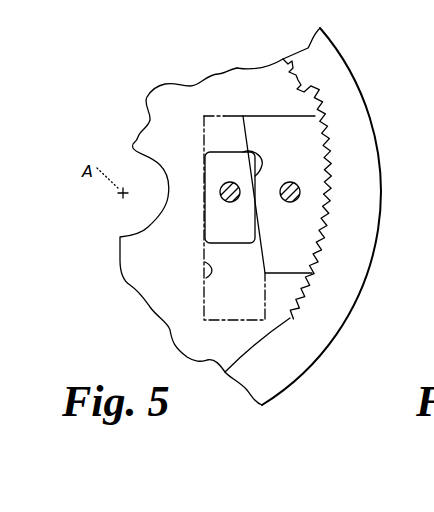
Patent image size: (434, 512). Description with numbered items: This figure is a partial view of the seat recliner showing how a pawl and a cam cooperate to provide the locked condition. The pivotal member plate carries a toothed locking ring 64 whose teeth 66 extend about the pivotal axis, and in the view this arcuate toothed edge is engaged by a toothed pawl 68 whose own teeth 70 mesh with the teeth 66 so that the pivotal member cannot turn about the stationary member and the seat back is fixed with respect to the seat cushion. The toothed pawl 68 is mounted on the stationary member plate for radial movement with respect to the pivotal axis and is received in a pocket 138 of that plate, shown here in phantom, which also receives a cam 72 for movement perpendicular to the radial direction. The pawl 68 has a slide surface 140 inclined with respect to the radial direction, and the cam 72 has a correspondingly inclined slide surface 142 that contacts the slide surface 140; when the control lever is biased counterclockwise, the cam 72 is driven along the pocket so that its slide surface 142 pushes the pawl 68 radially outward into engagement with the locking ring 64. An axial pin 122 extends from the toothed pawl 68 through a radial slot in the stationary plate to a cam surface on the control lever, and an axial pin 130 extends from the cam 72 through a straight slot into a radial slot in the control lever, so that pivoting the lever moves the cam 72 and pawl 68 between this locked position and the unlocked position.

The toothed locking ring 64 is at (273, 77).
The teeth 66 is at (298, 88).
The toothed pawl 68 is at (317, 153).
The teeth 70 is at (331, 210).
The cam 72 is at (213, 220).
The axial pin 122 is at (292, 202).
The axial pin 130 is at (219, 193).
The pocket 138 is at (211, 277).
The slide surface 140 is at (247, 143).
The slide surface 142 is at (243, 143).